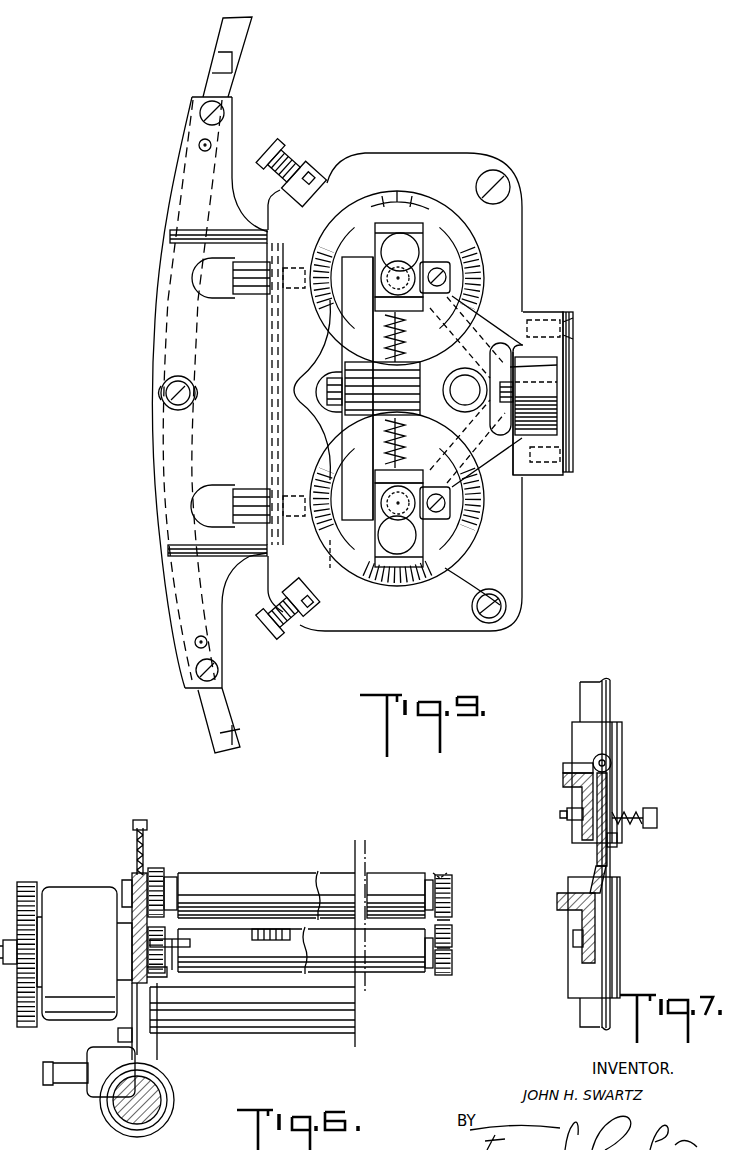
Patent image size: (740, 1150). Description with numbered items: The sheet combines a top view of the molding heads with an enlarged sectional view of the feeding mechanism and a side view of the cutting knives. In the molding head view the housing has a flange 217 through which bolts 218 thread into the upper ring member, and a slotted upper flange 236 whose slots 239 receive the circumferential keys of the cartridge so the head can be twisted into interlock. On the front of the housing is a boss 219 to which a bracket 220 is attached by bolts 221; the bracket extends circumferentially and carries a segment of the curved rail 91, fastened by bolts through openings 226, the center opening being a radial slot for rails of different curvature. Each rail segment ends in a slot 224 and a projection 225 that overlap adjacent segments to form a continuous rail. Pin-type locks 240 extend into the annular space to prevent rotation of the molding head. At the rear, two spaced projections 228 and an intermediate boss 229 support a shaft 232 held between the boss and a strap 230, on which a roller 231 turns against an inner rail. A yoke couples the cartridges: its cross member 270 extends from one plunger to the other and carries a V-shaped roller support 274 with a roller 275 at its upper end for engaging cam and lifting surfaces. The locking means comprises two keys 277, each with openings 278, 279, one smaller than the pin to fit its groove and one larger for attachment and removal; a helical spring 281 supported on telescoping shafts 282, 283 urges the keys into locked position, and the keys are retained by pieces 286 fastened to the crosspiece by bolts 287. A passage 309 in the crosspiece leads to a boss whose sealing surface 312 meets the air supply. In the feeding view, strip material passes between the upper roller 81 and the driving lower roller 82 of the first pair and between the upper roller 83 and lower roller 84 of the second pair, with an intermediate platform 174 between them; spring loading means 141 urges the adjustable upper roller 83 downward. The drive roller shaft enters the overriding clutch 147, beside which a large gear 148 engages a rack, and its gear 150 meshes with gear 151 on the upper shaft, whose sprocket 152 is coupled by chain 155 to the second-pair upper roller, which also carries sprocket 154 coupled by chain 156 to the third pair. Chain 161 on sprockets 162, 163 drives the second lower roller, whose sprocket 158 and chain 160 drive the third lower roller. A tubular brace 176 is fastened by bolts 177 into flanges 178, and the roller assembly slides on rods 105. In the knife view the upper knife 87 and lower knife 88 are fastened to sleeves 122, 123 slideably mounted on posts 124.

In FIG. 9, the curved rail 91 is at (243, 30).
In FIG. 9, the projection 225 is at (232, 62).
In FIG. 9, the slot 224 is at (235, 76).
In FIG. 9, the pin-type locks 240 is at (315, 149).
In FIG. 9, the keys 277 is at (405, 228).
In FIG. 9, the opening 279 is at (410, 250).
In FIG. 9, the opening 278 is at (430, 265).
In FIG. 9, the spaced projections 228 is at (535, 312).
In FIG. 9, the intermediate boss 229 is at (517, 348).
In FIG. 9, the passage 309 is at (477, 391).
In FIG. 9, the sealing surface 312 is at (530, 373).
In FIG. 9, the shaft 232 is at (562, 390).
In FIG. 9, the roller 231 is at (557, 420).
In FIG. 9, the strap 230 is at (568, 437).
In FIG. 9, the shaft 282 is at (405, 340).
In FIG. 9, the cross member 270 is at (460, 370).
In FIG. 9, the V-shaped roller support 274 is at (372, 398).
In FIG. 9, the roller 275 is at (418, 408).
In FIG. 9, the helical spring 281 is at (408, 452).
In FIG. 9, the shaft 283 is at (390, 456).
In FIG. 9, the bolts 287 is at (450, 502).
In FIG. 9, the pieces 286 is at (440, 520).
In FIG. 9, the flange 217 is at (512, 570).
In FIG. 9, the slotted upper flange 236 is at (518, 588).
In FIG. 9, the bolts 218 is at (506, 609).
In FIG. 9, the slots 239 is at (440, 600).
In FIG. 9, the boss 219 is at (293, 538).
In FIG. 9, the bolts 221 is at (247, 282).
In FIG. 9, the openings 226 is at (166, 398).
In FIG. 9, the bracket 220 is at (205, 442).
In FIG. 6, the large gear 148 is at (30, 880).
In FIG. 6, the overriding clutch 147 is at (75, 900).
In FIG. 6, the spring loading means 141 is at (160, 844).
In FIG. 6, the chain 156 is at (170, 862).
In FIG. 6, the gear 151 is at (170, 870).
In FIG. 6, the sprocket 154 is at (170, 882).
In FIG. 6, the upper roller 83 is at (237, 872).
In FIG. 6, the gear 150 is at (179, 905).
In FIG. 6, the lower roller 84 is at (255, 948).
In FIG. 6, the intermediate platform 174 is at (288, 928).
In FIG. 6, the upper roller 81 is at (392, 878).
In FIG. 6, the chain 155 is at (440, 875).
In FIG. 6, the sprocket 152 is at (447, 878).
In FIG. 6, the chain 161 is at (450, 920).
In FIG. 6, the sprocket 162 is at (453, 935).
In FIG. 6, the sprocket 163 is at (455, 958).
In FIG. 6, the lower roller 82 is at (392, 945).
In FIG. 6, the tubular brace 176 is at (340, 1028).
In FIG. 6, the sprocket 158 is at (188, 945).
In FIG. 6, the chain 160 is at (170, 976).
In FIG. 6, the bolts 177 is at (118, 1042).
In FIG. 6, the flanges 178 is at (152, 1033).
In FIG. 6, the rods 105 is at (160, 1098).
In FIG. 7, the posts 124 is at (612, 703).
In FIG. 7, the sleeve 122 is at (618, 739).
In FIG. 7, the upper knife 87 is at (600, 852).
In FIG. 7, the lower knife 88 is at (592, 870).
In FIG. 7, the lower sleeve 123 is at (620, 931).